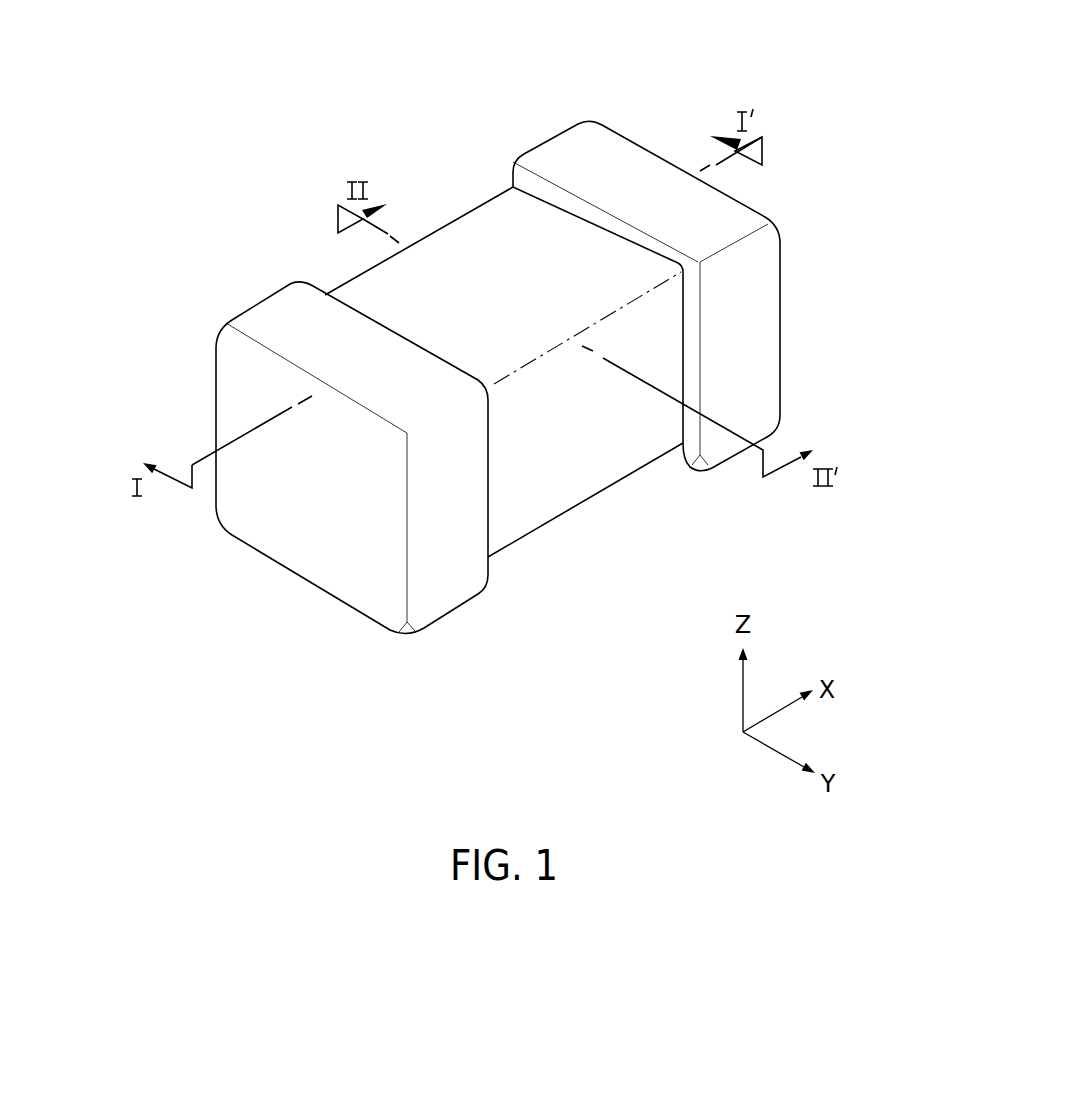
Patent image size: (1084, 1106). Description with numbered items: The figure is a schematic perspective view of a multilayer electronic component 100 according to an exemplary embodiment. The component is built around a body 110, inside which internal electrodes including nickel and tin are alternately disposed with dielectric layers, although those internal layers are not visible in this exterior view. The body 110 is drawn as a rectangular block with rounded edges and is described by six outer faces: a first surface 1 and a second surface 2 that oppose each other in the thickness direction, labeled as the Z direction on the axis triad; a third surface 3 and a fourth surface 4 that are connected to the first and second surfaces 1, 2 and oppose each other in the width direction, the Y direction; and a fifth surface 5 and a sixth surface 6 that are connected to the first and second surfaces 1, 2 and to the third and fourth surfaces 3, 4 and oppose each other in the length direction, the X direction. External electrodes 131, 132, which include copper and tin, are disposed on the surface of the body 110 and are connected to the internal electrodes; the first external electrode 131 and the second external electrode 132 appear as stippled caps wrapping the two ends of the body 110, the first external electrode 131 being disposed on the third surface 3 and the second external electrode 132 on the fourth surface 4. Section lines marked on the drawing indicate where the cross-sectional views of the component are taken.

The multilayer electronic component 100 is at (274, 51).
The body 110 is at (445, 247).
The first external electrode 131 is at (278, 313).
The second external electrode 132 is at (570, 145).
The first surface 1 is at (525, 520).
The second surface 2 is at (569, 246).
The third surface 3 is at (305, 516).
The fourth surface 4 is at (760, 309).
The fifth surface 5 is at (588, 447).
The sixth surface 6 is at (500, 250).